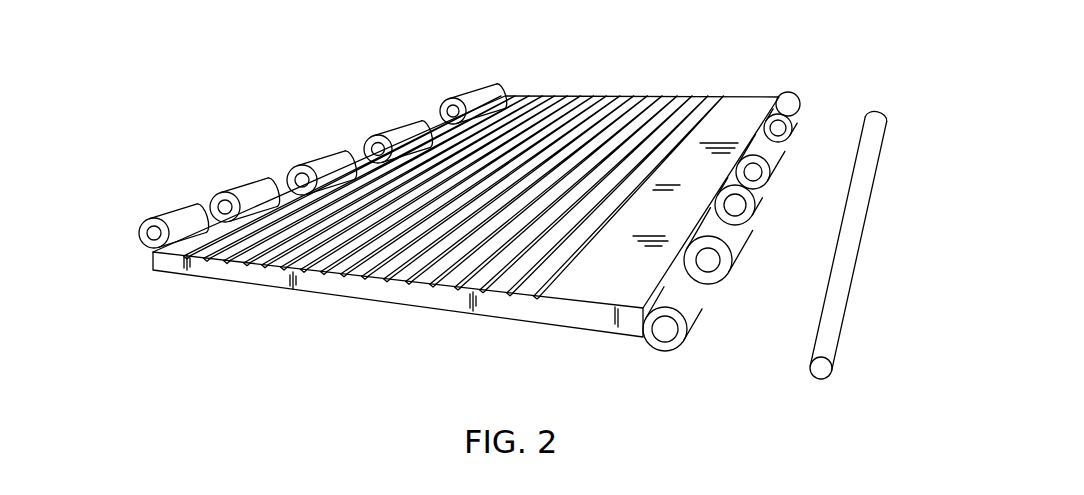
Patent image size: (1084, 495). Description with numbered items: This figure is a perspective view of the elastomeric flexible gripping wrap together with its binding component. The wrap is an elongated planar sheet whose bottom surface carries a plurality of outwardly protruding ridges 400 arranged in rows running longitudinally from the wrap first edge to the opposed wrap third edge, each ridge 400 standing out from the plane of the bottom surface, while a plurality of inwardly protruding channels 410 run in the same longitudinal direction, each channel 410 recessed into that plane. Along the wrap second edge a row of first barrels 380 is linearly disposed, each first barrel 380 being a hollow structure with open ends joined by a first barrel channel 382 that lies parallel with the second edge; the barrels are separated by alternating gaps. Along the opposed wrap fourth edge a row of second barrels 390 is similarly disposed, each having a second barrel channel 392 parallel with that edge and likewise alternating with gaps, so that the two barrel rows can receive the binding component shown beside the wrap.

The first barrels 380 is at (382, 126).
The first barrel channel 382 is at (151, 241).
The second barrels 390 is at (800, 106).
The second barrel channel 392 is at (663, 341).
The outwardly protruding ridges 400 is at (343, 268).
The inwardly protruding channels 410 is at (458, 290).